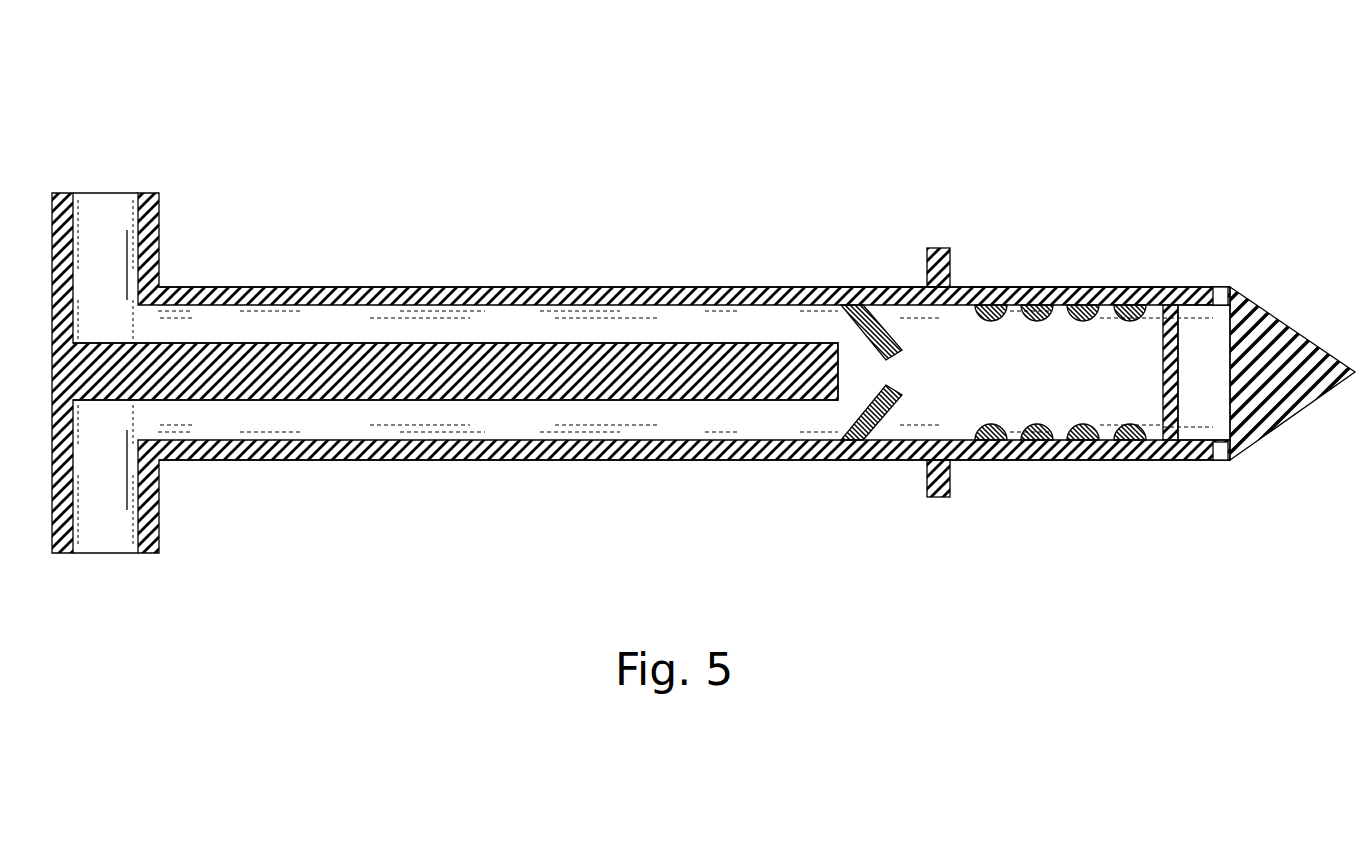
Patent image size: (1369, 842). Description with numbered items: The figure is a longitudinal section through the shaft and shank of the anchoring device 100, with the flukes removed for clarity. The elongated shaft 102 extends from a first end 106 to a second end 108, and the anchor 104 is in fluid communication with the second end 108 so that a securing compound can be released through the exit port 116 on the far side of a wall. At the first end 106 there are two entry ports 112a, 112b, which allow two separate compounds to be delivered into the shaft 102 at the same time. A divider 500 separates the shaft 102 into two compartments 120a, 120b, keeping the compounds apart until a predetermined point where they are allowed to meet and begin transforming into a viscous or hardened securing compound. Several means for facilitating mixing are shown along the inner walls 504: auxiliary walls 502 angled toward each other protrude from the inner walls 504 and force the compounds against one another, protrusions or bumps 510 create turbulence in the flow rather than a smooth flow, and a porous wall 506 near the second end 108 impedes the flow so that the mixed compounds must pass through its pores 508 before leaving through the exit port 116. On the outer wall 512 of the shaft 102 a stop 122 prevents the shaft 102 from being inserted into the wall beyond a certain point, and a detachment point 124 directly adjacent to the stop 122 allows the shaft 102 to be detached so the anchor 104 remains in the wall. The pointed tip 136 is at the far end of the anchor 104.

The anchoring device 100 is at (742, 108).
The elongated shaft 102 is at (448, 290).
The anchor 104 is at (1103, 290).
The first end 106 is at (208, 195).
The second end 108 is at (868, 262).
The entry port 112a is at (100, 545).
The entry port 112b is at (100, 205).
The exit port 116 is at (1219, 280).
The compartment 120a is at (250, 418).
The compartment 120b is at (250, 328).
The stop 122 is at (940, 248).
The detachment point 124 is at (918, 468).
The tip 136 is at (1280, 325).
The divider 500 is at (372, 348).
The auxiliary walls 502 is at (882, 318).
The inner walls 504 is at (648, 315).
The porous wall 506 is at (1168, 312).
The pores 508 is at (1158, 460).
The protrusions or bumps 510 is at (990, 302).
The outer wall 512 is at (520, 272).